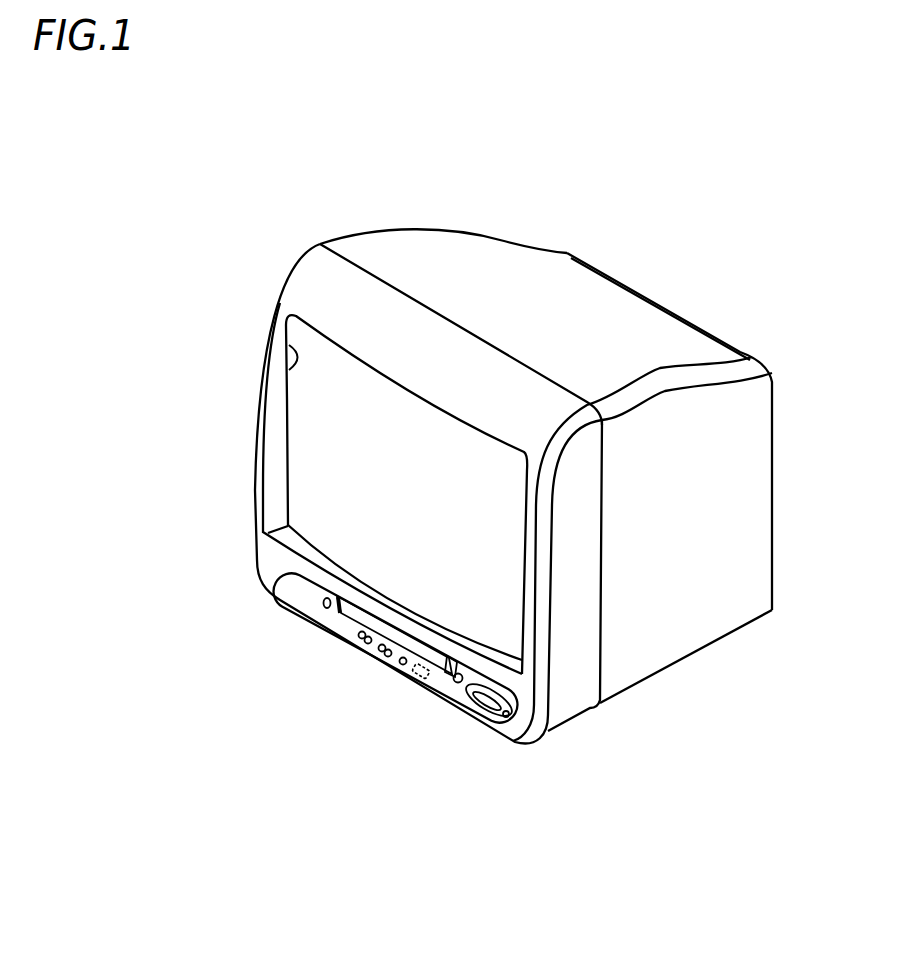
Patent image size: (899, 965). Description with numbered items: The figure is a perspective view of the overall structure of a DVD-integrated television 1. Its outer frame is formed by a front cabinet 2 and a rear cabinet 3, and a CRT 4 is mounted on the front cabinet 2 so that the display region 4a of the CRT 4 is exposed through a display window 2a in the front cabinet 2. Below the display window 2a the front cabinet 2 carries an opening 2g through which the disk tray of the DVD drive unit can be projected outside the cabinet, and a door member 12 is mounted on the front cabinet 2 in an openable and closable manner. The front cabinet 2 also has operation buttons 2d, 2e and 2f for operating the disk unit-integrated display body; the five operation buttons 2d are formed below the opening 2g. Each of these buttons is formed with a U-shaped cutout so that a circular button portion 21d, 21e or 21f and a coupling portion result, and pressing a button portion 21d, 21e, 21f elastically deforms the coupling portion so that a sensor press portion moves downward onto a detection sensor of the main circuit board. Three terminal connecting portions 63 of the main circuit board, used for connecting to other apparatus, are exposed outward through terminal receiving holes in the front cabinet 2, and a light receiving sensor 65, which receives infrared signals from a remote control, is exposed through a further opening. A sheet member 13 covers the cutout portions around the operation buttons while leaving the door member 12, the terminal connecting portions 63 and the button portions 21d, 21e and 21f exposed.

The DVD-integrated television 1 is at (250, 203).
The front cabinet 2 is at (327, 295).
The display window 2a is at (292, 368).
The operation buttons 2d is at (265, 721).
The operation button 2e is at (413, 781).
The operation button 2f is at (225, 604).
The opening 2g is at (338, 613).
The rear cabinet 3 is at (612, 300).
The CRT 4 is at (333, 395).
The display region 4a is at (342, 442).
The door member 12 is at (430, 678).
The sheet member 13 is at (290, 578).
The button portions 21d is at (400, 665).
The button portion 21e is at (457, 683).
The button portion 21f is at (322, 603).
The terminal connecting portions 63 is at (473, 698).
The light receiving sensor 65 is at (413, 680).